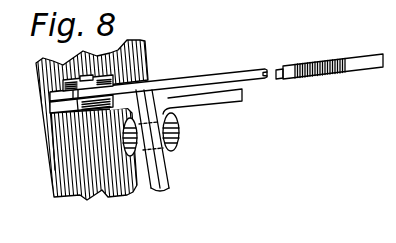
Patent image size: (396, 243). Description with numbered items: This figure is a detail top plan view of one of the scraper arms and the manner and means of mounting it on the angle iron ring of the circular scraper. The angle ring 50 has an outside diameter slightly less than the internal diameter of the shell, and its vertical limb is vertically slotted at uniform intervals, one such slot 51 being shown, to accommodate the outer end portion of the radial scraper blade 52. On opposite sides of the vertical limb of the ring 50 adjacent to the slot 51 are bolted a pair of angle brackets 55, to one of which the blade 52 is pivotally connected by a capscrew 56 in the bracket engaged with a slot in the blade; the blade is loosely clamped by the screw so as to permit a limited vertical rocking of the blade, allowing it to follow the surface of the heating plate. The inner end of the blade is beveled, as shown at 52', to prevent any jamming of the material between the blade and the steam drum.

The angle ring 50 is at (68, 172).
The slot 51 is at (149, 78).
The radial scraper blade 52 is at (265, 54).
The beveled inner end of the blade 52' is at (329, 53).
The angle bracket 55 is at (201, 101).
The capscrew 56 is at (66, 64).